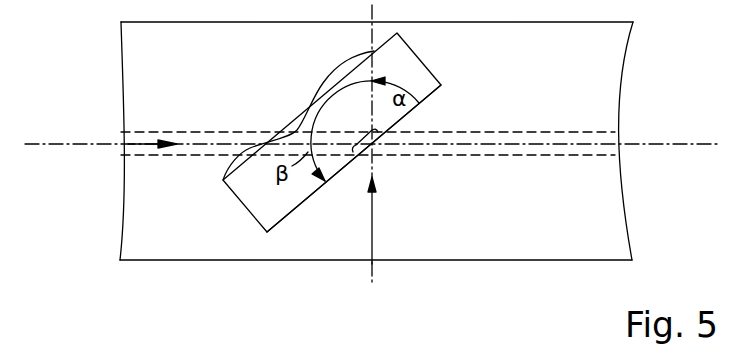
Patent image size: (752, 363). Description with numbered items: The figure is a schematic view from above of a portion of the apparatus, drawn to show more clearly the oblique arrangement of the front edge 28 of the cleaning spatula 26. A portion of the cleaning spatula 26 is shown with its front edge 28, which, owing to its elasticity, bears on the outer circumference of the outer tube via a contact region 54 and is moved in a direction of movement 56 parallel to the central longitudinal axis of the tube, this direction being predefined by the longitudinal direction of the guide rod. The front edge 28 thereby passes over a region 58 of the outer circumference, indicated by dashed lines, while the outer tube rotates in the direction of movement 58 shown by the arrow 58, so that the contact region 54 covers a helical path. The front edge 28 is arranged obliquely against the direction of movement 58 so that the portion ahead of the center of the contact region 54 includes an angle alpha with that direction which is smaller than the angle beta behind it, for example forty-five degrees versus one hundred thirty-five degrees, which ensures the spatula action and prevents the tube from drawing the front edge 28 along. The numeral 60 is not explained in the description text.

The cleaning spatula 26 is at (413, 73).
The front edge 28 is at (432, 94).
The contact region 54 is at (358, 131).
The direction of movement 56 is at (143, 143).
The direction of movement of the outer circumference of the outer tube 58 is at (372, 230).
The longitudinal center line 60 is at (62, 142).